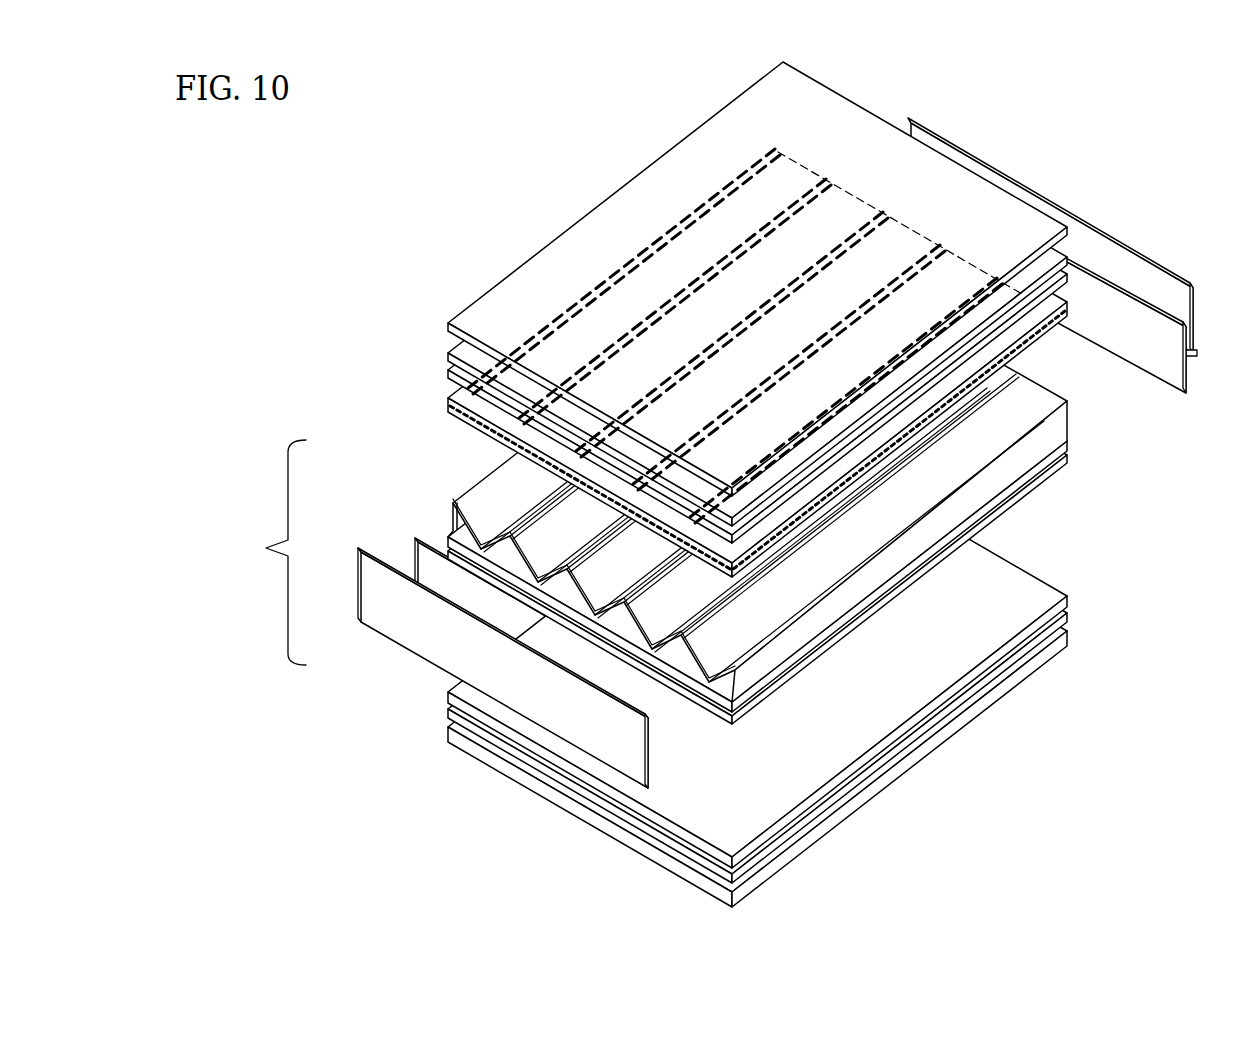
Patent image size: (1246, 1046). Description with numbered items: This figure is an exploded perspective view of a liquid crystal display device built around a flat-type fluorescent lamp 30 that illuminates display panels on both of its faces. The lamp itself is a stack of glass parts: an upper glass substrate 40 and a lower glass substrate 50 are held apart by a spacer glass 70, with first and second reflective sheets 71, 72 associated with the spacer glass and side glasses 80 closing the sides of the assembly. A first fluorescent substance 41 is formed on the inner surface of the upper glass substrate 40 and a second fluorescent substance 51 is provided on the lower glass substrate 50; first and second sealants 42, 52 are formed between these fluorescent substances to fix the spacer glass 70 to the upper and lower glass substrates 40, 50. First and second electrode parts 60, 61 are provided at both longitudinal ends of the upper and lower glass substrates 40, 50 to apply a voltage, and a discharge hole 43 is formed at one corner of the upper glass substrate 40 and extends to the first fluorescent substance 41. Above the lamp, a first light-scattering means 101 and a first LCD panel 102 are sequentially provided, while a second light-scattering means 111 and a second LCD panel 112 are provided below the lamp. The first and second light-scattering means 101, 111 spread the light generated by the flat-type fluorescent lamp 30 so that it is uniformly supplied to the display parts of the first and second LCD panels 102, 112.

The flat-type fluorescent lamp 30 is at (266, 552).
The upper glass substrate 40 is at (729, 387).
The first fluorescent substance 41 is at (733, 503).
The first sealant 42 is at (827, 480).
The discharge hole 43 is at (1027, 300).
The lower glass substrate 50 is at (527, 592).
The second fluorescent substance 51 is at (738, 688).
The second sealant 52 is at (710, 692).
The first electrode part 60 is at (358, 580).
The second electrode part 61 is at (1125, 250).
The spacer glass 70 is at (725, 496).
The first reflective sheet 71 is at (470, 502).
The second reflective sheet 72 is at (448, 537).
The side glass 80 is at (1152, 362).
The first light-scattering means 101 is at (448, 373).
The first LCD panel 102 is at (505, 300).
The second light-scattering means 111 is at (1066, 601).
The second LCD panel 112 is at (1040, 663).